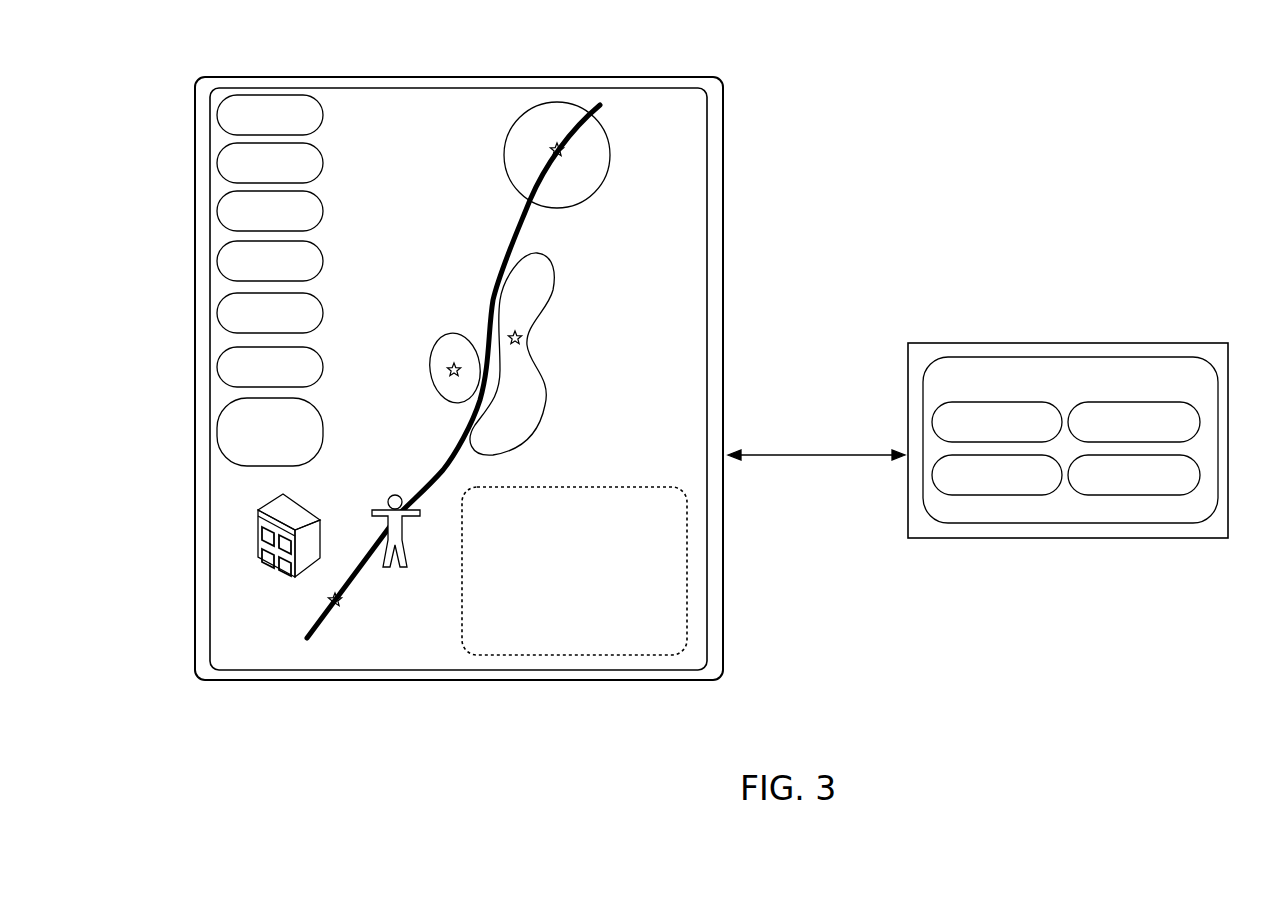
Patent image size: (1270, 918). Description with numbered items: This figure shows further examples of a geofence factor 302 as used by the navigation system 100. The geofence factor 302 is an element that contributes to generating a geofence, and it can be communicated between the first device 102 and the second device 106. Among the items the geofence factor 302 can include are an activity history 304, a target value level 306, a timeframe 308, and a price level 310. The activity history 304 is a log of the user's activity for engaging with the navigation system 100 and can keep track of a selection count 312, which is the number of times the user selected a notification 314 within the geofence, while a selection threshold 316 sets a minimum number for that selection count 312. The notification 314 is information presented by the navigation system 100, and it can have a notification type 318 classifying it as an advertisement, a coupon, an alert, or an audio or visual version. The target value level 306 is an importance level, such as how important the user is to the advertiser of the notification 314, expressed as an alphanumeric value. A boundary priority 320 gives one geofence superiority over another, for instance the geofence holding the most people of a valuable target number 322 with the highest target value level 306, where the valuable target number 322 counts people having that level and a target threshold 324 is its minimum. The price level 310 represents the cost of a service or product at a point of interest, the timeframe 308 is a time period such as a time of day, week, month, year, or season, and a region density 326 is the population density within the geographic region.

The navigation system 100 is at (290, 46).
The first device 102 is at (503, 66).
The second device 106 is at (1106, 330).
The geofence factor 302 is at (1070, 440).
The activity history 304 is at (997, 422).
The target value level 306 is at (1134, 422).
The timeframe 308 is at (226, 118).
The price level 310 is at (227, 163).
The selection count 312 is at (232, 210).
The notification 314 is at (687, 533).
The selection threshold 316 is at (997, 475).
The notification type 318 is at (235, 262).
The boundary priority 320 is at (240, 317).
The valuable target number 322 is at (233, 370).
The target threshold 324 is at (1134, 475).
The region density 326 is at (230, 420).